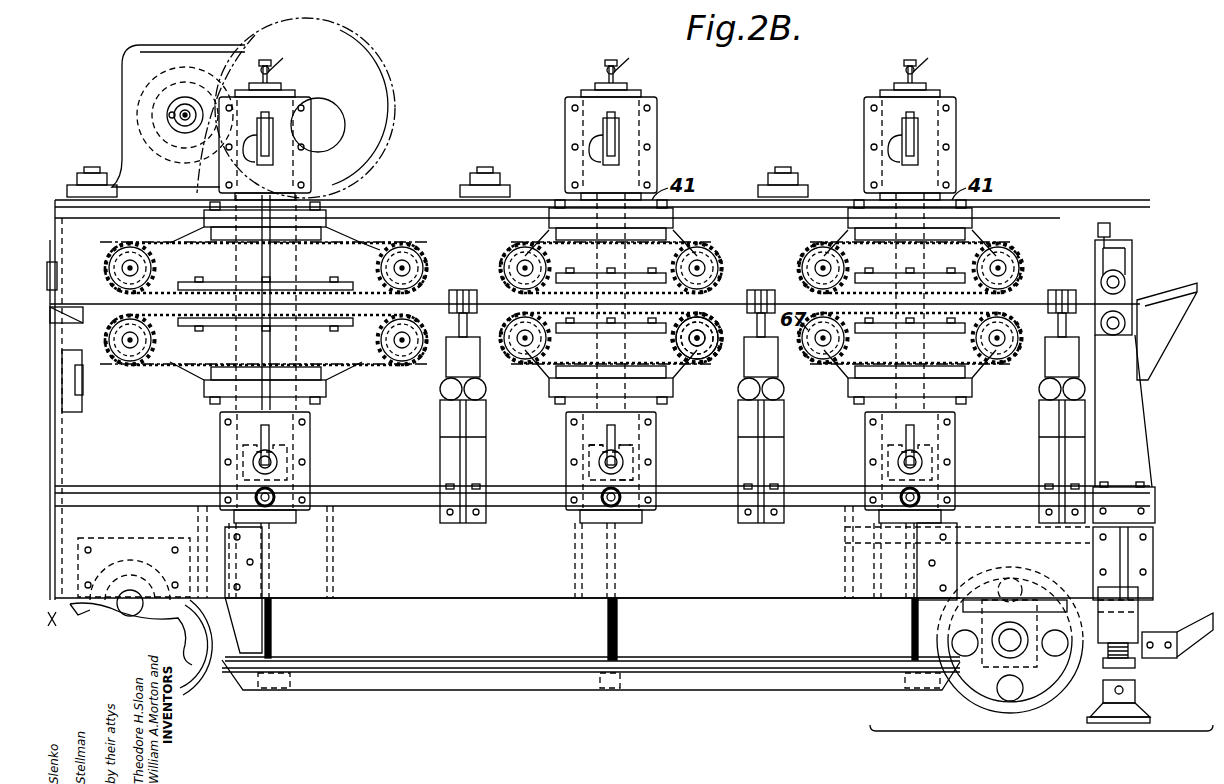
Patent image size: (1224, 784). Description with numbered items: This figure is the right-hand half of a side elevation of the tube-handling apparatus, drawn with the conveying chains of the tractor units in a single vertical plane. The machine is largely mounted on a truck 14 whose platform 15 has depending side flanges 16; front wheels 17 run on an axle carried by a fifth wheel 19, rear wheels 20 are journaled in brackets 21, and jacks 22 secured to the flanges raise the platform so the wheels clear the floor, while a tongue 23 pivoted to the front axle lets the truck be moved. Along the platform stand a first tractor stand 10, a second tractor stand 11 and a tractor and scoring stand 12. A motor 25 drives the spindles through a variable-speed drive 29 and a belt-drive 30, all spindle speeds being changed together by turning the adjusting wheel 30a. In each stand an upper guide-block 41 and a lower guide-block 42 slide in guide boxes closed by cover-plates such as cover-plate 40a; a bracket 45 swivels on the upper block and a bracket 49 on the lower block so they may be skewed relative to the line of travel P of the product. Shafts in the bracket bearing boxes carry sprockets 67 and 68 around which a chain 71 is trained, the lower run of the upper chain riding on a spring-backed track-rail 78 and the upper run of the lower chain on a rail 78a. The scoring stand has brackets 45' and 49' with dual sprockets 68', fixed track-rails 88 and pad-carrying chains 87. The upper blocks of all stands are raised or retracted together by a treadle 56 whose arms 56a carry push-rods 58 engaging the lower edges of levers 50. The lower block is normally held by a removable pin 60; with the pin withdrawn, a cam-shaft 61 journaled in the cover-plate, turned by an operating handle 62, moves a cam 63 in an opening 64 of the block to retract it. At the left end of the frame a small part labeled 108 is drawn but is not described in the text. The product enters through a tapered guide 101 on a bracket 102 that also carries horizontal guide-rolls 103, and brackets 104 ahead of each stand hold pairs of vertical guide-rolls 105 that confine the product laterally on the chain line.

The first tractor stand 10 is at (957, 128).
The second tractor stand 11 is at (657, 125).
The tractor and scoring stand 12 is at (312, 160).
The truck 14 is at (740, 590).
The platform 15 is at (380, 488).
The side flange 16 is at (1153, 558).
The front wheels 17 is at (950, 690).
The fifth wheel 19 is at (1038, 590).
The rear wheels 20 is at (183, 684).
The brackets 21 is at (185, 625).
The jacks 22 is at (1138, 620).
The tongue 23 is at (1160, 658).
The motor 25 is at (140, 92).
The variable-speed drive 29 is at (395, 132).
The belt-drive 30 is at (370, 60).
The adjusting wheel 30a is at (170, 118).
The cover-plate 40a is at (566, 440).
The guide-block 41 is at (153, 210).
The guide-block 42 is at (635, 404).
The bracket 45 is at (678, 251).
The bracket 45' is at (377, 236).
The bracket 49 is at (674, 376).
The bracket 49' is at (265, 383).
The levers 50 is at (275, 150).
The treadle 56 is at (462, 662).
The arms 56a is at (286, 692).
The push-rods 58 is at (266, 622).
The pin 60 is at (615, 505).
The cam-shaft 61 is at (600, 462).
The operating handle 62 is at (620, 445).
The cam 63 is at (656, 450).
The opening 64 is at (635, 462).
The sprocket 67 is at (110, 272).
The sprocket 68 is at (867, 297).
The dual sprocket 68' is at (421, 263).
The chain 71 is at (670, 245).
The track-rail 78 is at (704, 266).
The rail 78a is at (709, 338).
The chains 87 is at (330, 252).
The fixed track-rails 88 is at (222, 290).
The tapered guide 101 is at (1180, 288).
The bracket 102 is at (1128, 425).
The horizontal guide-rolls 103 is at (1120, 272).
The brackets 104 is at (1042, 440).
The vertical guide-rolls 105 is at (478, 300).
The bracket 108 is at (77, 359).
The line of travel P is at (740, 300).